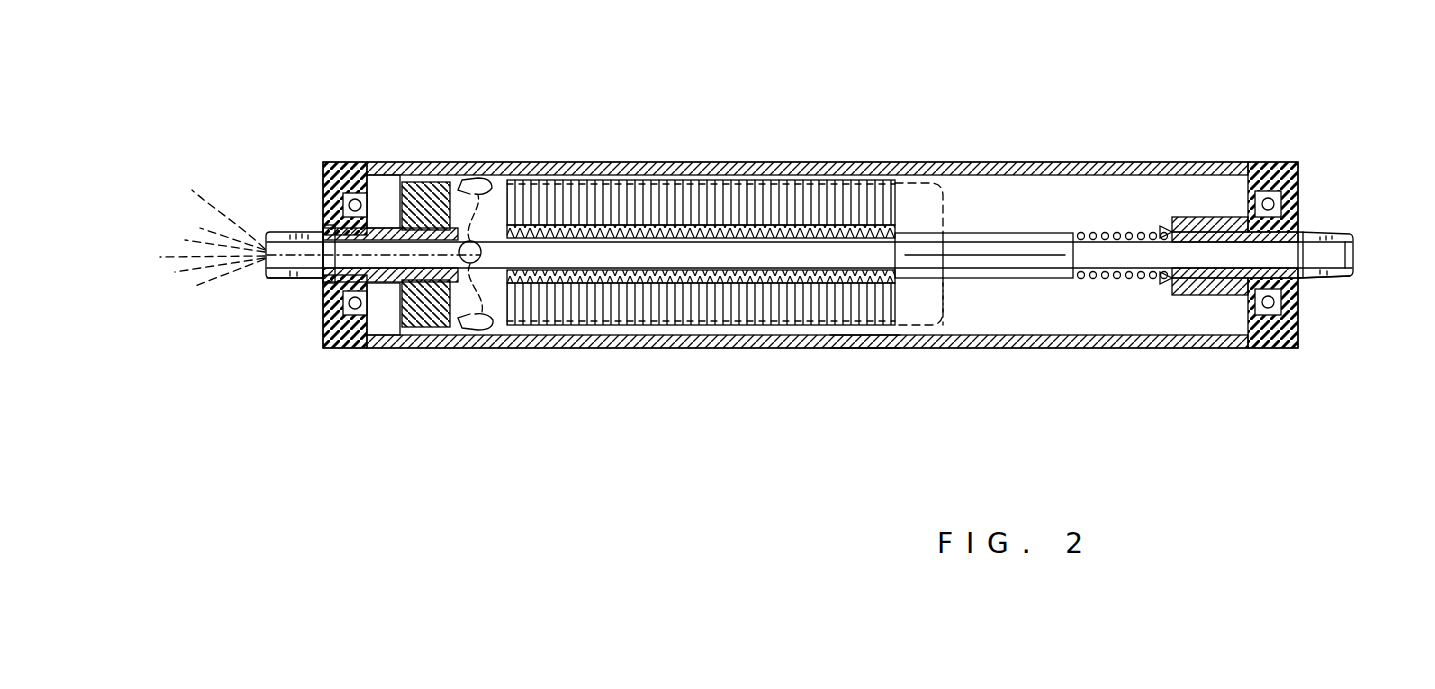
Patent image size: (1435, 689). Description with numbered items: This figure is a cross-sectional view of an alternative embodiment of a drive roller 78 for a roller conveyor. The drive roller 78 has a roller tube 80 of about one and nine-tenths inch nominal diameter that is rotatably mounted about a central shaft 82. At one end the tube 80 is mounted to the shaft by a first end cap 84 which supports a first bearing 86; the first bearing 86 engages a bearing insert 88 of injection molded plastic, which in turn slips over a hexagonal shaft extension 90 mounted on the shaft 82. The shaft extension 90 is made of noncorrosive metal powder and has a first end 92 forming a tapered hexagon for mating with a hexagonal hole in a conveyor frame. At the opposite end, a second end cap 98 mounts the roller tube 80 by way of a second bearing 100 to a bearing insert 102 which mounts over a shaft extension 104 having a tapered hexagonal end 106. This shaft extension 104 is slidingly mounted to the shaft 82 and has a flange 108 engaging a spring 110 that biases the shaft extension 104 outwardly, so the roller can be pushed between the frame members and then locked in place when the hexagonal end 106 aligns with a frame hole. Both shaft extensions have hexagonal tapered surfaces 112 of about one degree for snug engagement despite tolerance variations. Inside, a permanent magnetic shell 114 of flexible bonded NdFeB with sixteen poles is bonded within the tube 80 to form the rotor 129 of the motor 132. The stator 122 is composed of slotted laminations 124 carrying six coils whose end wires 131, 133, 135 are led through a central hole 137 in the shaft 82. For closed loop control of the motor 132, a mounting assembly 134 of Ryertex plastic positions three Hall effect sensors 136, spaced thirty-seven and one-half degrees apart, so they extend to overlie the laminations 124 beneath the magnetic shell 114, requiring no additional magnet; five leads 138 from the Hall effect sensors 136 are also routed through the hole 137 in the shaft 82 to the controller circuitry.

The drive roller 78 is at (722, 136).
The roller tube 80 is at (1062, 163).
The shaft 82 is at (1028, 232).
The first end cap 84 is at (325, 195).
The first bearing 86 is at (383, 213).
The bearing insert 88 is at (405, 212).
The hexagonal shaft extension 90 is at (313, 231).
The first end 92 is at (268, 279).
The second end cap 98 is at (1300, 183).
The second bearing 100 is at (1262, 306).
The bearing insert 102 is at (1200, 217).
The shaft extension 104 is at (1327, 279).
The tapered hexagonal end 106 is at (1337, 232).
The flange 108 is at (1165, 230).
The spring 110 is at (1100, 279).
The hexagonal tapered surfaces 112 is at (1354, 255).
The permanent magnetic shell 114 is at (905, 173).
The stator 122 is at (920, 180).
The laminations 124 is at (898, 302).
The rotor 129 is at (861, 349).
The end wire 131 is at (213, 280).
The motor 132 is at (942, 346).
The end wire 133 is at (163, 272).
The mounting assembly 134 is at (415, 329).
The end wire 135 is at (220, 243).
The Hall effect sensors 136 is at (492, 178).
The central hole 137 is at (318, 280).
The leads 138 is at (230, 212).